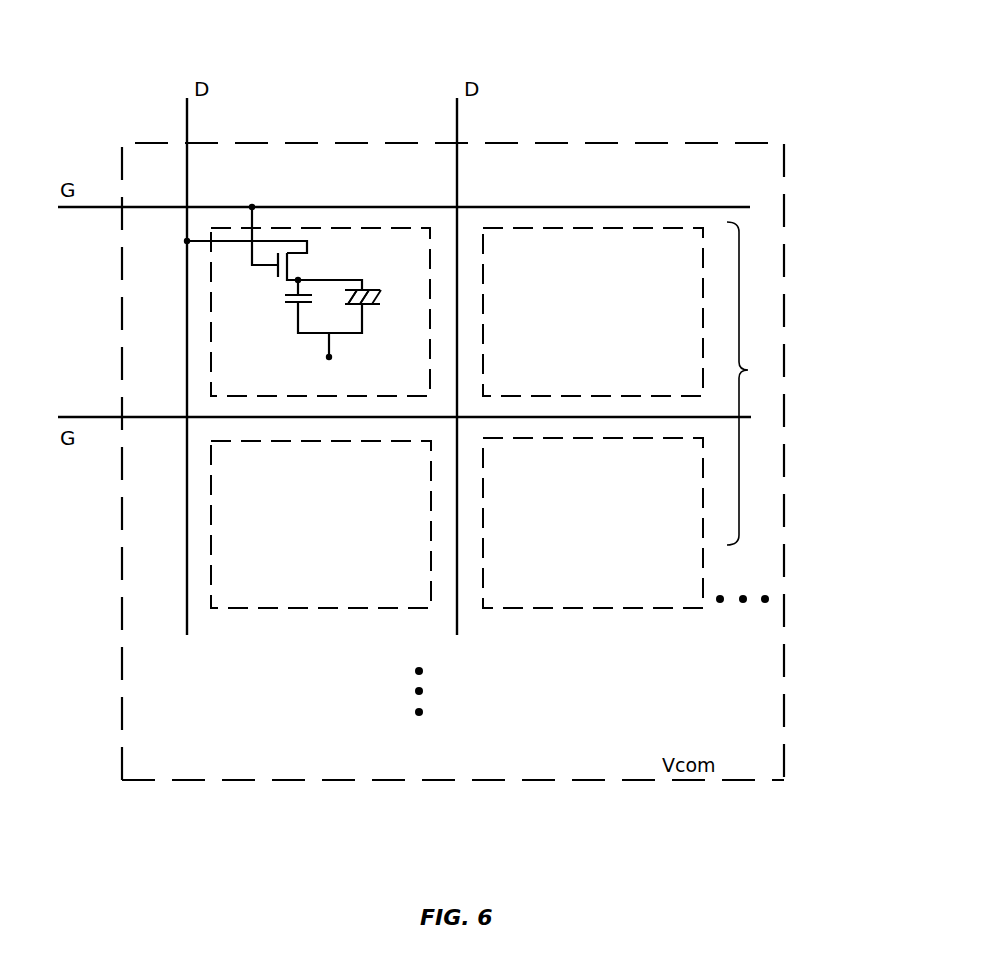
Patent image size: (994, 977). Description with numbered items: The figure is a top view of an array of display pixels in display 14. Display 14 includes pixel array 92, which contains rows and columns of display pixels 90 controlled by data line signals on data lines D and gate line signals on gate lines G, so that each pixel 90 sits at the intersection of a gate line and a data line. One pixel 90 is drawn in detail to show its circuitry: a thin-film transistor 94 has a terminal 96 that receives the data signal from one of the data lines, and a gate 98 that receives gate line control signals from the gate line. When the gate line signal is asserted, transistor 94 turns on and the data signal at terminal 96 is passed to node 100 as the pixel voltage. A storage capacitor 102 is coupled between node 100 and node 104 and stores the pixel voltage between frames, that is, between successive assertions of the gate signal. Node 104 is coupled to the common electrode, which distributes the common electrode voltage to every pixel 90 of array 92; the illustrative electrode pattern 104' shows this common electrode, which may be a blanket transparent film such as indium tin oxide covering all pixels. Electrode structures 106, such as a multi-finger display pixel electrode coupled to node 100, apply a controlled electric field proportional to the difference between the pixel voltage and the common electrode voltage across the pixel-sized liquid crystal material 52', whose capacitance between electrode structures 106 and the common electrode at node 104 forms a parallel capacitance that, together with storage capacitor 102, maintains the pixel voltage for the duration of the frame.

The display 14 is at (750, 62).
The display pixel 90 is at (333, 228).
The pixel array 92 is at (748, 370).
The thin-film transistor 94 is at (255, 280).
The terminal 96 is at (309, 245).
The gate 98 is at (258, 266).
The node 100 is at (295, 282).
The storage capacitor 102 is at (288, 310).
The node 104 is at (361, 354).
The electrode pattern 104' is at (453, 810).
The electrode structures 106 is at (373, 290).
The liquid crystal material 52' is at (385, 276).